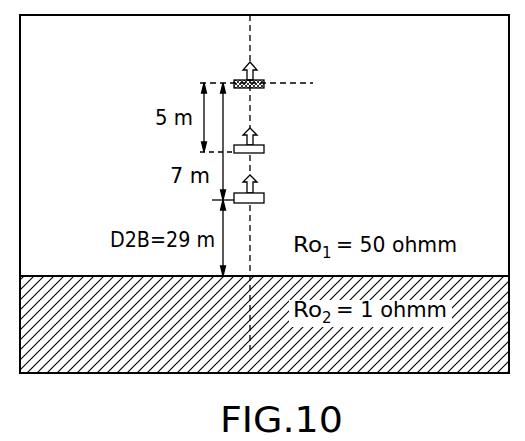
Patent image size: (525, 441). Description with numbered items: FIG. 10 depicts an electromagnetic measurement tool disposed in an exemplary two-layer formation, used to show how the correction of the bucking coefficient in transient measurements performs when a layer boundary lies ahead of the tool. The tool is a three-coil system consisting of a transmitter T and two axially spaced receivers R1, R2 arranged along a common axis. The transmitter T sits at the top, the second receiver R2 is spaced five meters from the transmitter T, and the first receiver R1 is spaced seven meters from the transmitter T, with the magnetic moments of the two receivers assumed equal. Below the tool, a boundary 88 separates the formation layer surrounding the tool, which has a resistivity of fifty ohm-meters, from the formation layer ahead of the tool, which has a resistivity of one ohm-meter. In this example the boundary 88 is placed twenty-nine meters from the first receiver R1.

The boundary 88 is at (478, 283).
The transmitter T is at (259, 73).
The first receiver R1 is at (265, 197).
The second receiver R2 is at (265, 149).